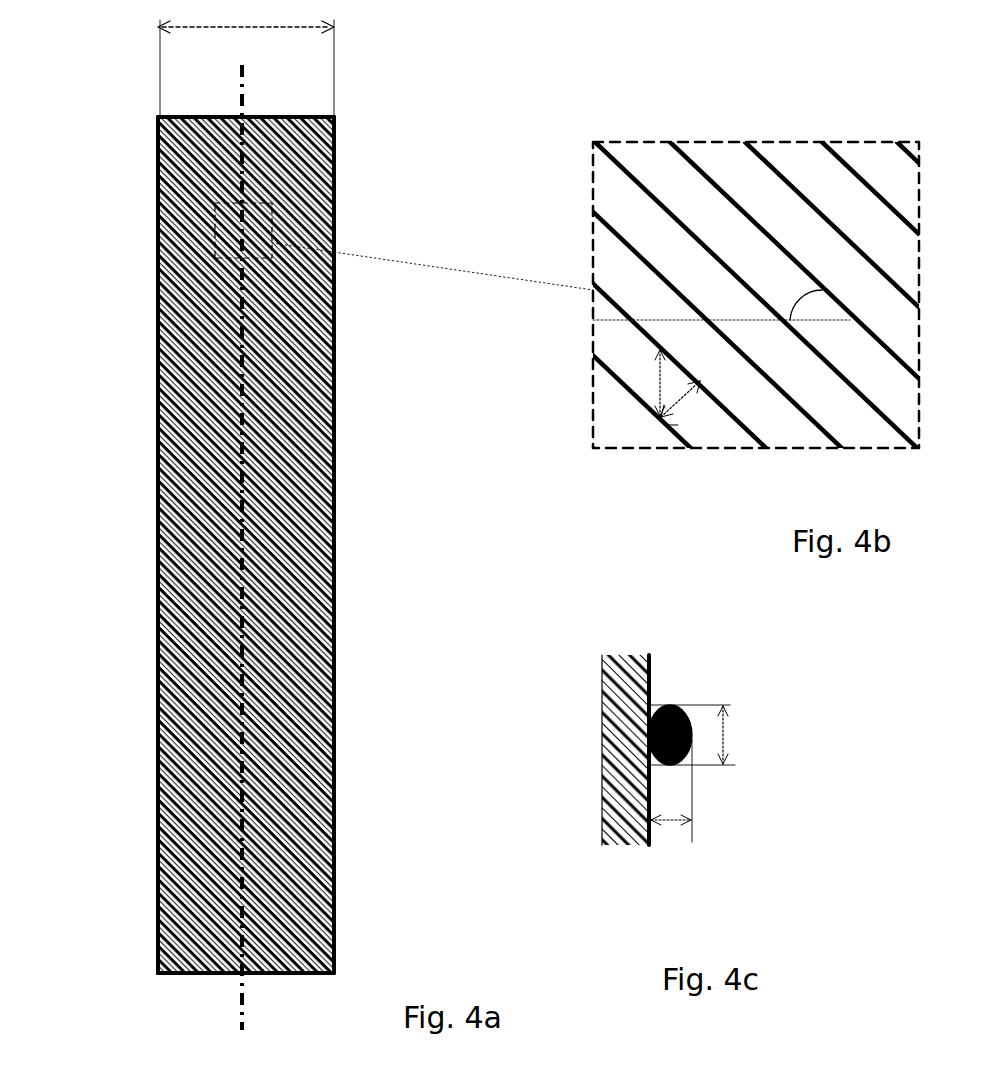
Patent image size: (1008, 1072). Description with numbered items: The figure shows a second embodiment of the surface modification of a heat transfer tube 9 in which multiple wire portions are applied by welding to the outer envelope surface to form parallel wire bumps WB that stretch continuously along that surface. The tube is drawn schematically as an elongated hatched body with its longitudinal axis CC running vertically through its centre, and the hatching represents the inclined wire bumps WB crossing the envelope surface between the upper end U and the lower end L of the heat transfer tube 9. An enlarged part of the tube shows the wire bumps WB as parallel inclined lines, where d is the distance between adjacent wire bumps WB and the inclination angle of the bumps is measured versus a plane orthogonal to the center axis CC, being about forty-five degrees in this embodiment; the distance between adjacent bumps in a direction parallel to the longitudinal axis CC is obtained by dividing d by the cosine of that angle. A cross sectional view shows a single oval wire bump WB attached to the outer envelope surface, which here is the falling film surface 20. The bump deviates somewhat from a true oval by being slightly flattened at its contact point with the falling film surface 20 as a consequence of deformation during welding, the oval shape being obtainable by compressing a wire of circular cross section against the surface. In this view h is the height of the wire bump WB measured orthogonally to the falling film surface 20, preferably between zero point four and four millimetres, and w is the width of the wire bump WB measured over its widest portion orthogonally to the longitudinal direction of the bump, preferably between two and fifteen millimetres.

In FIG. 4a, the heat transfer tube 9 is at (158, 293).
In FIG. 4a, the wire bump WB is at (158, 137).
In FIG. 4b, the wire bump WB is at (893, 142).
In FIG. 4a, the upper end U is at (267, 117).
In FIG. 4a, the lower end L is at (233, 975).
In FIG. 4a, the longitudinal axis CC is at (247, 562).
In FIG. 4b, the distance between adjacent wire bumps d is at (683, 396).
In FIG. 4c, the falling film surface 20 is at (650, 660).
In FIG. 4c, the width of wire bump w is at (709, 735).
In FIG. 4c, the height of wire bump h is at (671, 801).